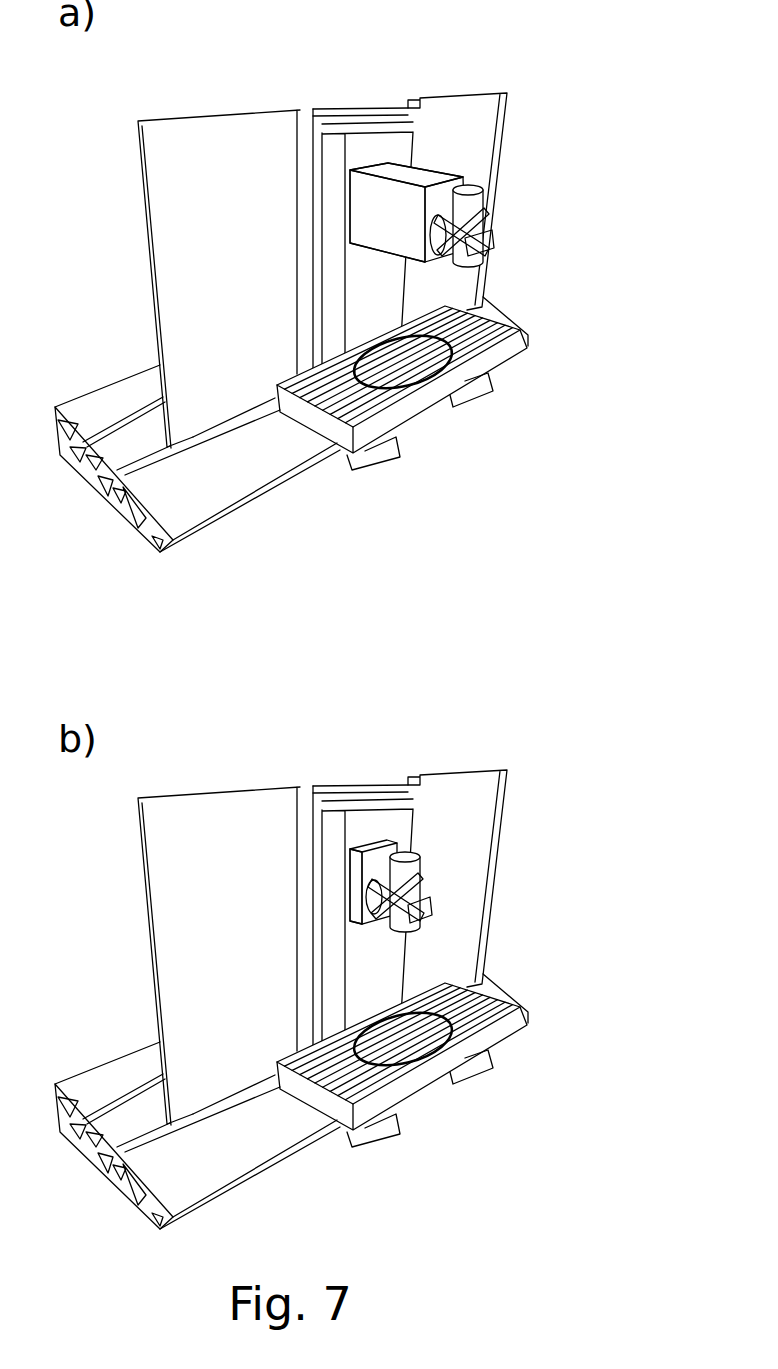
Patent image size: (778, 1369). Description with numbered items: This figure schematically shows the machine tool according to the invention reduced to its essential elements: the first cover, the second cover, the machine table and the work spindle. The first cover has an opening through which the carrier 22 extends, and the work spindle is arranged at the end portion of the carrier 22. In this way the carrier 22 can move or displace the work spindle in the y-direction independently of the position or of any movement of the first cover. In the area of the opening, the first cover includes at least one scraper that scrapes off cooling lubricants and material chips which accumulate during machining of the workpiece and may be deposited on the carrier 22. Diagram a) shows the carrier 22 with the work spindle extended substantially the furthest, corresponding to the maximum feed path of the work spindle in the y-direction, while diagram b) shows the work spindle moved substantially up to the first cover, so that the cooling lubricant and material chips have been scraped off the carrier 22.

The carrier 22 is at (420, 178).